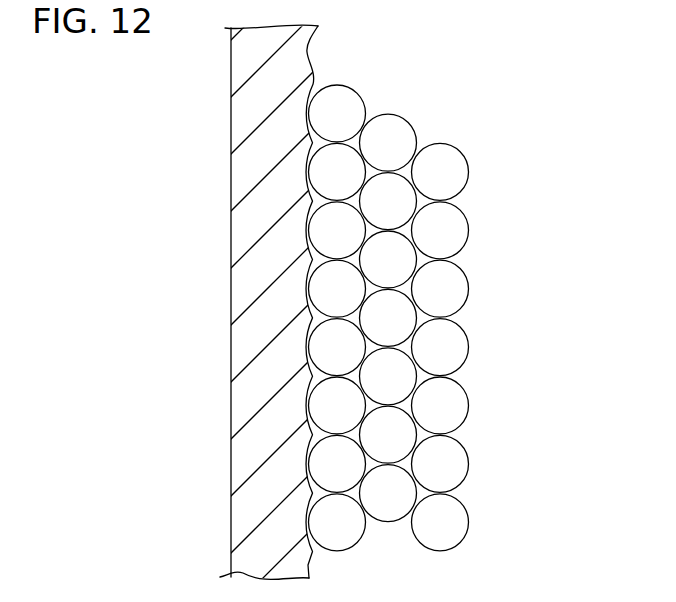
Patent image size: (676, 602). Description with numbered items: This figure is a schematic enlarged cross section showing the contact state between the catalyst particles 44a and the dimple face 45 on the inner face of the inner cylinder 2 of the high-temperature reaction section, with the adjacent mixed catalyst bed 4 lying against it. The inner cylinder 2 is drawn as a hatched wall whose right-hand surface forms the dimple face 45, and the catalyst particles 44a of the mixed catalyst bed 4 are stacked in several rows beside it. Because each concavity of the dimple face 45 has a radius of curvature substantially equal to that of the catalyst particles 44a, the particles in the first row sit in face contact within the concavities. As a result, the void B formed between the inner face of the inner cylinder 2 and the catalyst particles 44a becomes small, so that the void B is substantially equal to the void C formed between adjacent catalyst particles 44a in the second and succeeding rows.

The inner cylinder 2 is at (268, 301).
The dimple face 45 is at (308, 63).
The mixed catalyst bed 4 is at (453, 318).
The catalyst particles 44a is at (417, 127).
The void between inner face and catalyst particles B is at (335, 259).
The void between adjacent catalyst particles C is at (343, 259).